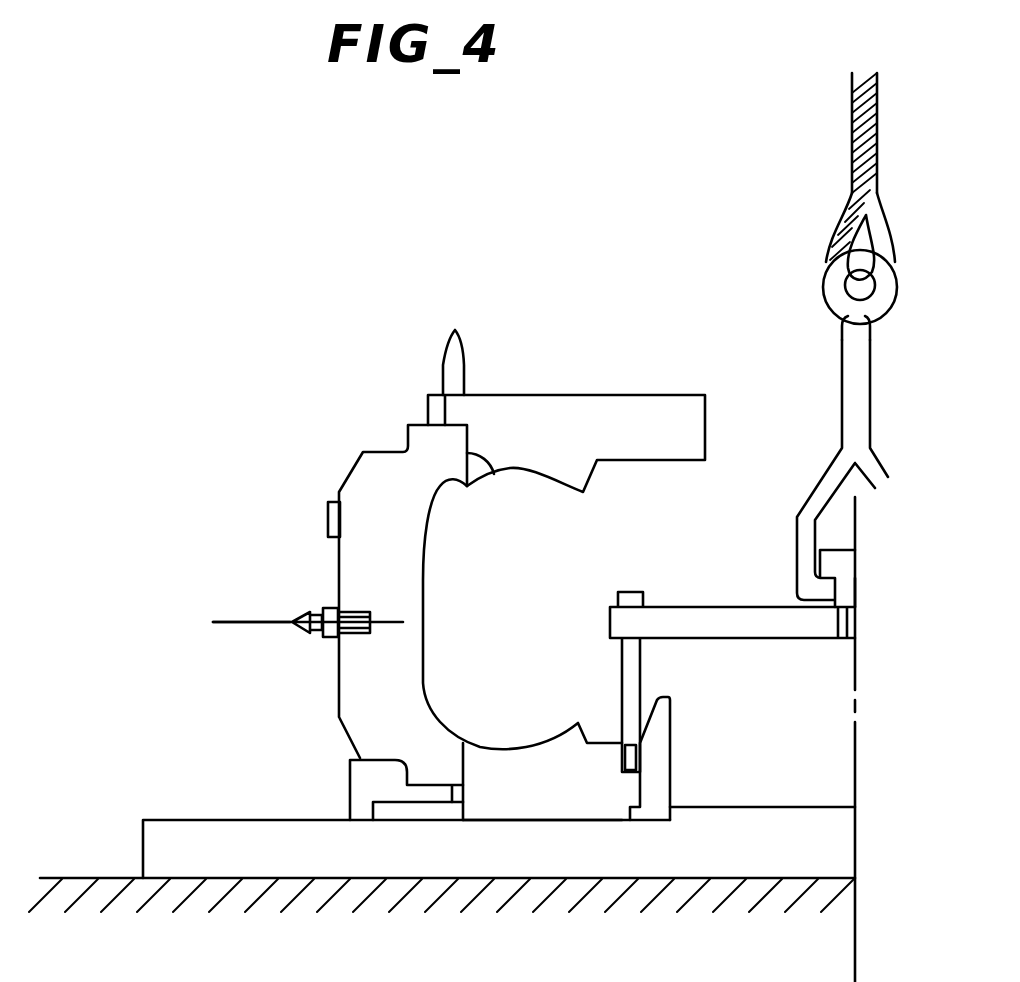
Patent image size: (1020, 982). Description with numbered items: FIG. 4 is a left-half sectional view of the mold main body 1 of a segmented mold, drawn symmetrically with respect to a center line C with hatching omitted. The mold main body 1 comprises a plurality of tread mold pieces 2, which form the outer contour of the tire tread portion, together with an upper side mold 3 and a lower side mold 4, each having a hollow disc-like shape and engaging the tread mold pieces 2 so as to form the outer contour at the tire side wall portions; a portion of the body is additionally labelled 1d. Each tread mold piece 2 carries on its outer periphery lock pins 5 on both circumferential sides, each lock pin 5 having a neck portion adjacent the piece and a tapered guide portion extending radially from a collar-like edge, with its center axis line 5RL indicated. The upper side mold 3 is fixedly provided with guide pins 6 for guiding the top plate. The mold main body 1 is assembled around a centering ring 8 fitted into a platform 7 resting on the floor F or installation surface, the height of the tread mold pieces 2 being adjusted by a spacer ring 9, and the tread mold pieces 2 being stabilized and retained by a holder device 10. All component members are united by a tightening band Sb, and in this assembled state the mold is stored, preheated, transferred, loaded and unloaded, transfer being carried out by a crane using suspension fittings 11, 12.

The mold main body 1 is at (357, 442).
The lip 1d is at (483, 472).
The tread mold pieces 2 is at (400, 582).
The upper side mold 3 is at (567, 408).
The lower side mold 4 is at (530, 795).
The lock pin 5 is at (301, 631).
The center axis line of the lock pin 5RL is at (242, 622).
The guide pins 6 is at (462, 355).
The platform 7 is at (176, 826).
The centering ring 8 is at (661, 760).
The spacer ring 9 is at (430, 795).
The holder device 10 is at (382, 783).
The suspension fitting 11 is at (710, 608).
The suspension fitting 12 is at (872, 337).
The tightening band Sb is at (327, 513).
The center line C is at (857, 662).
The floor F is at (75, 878).